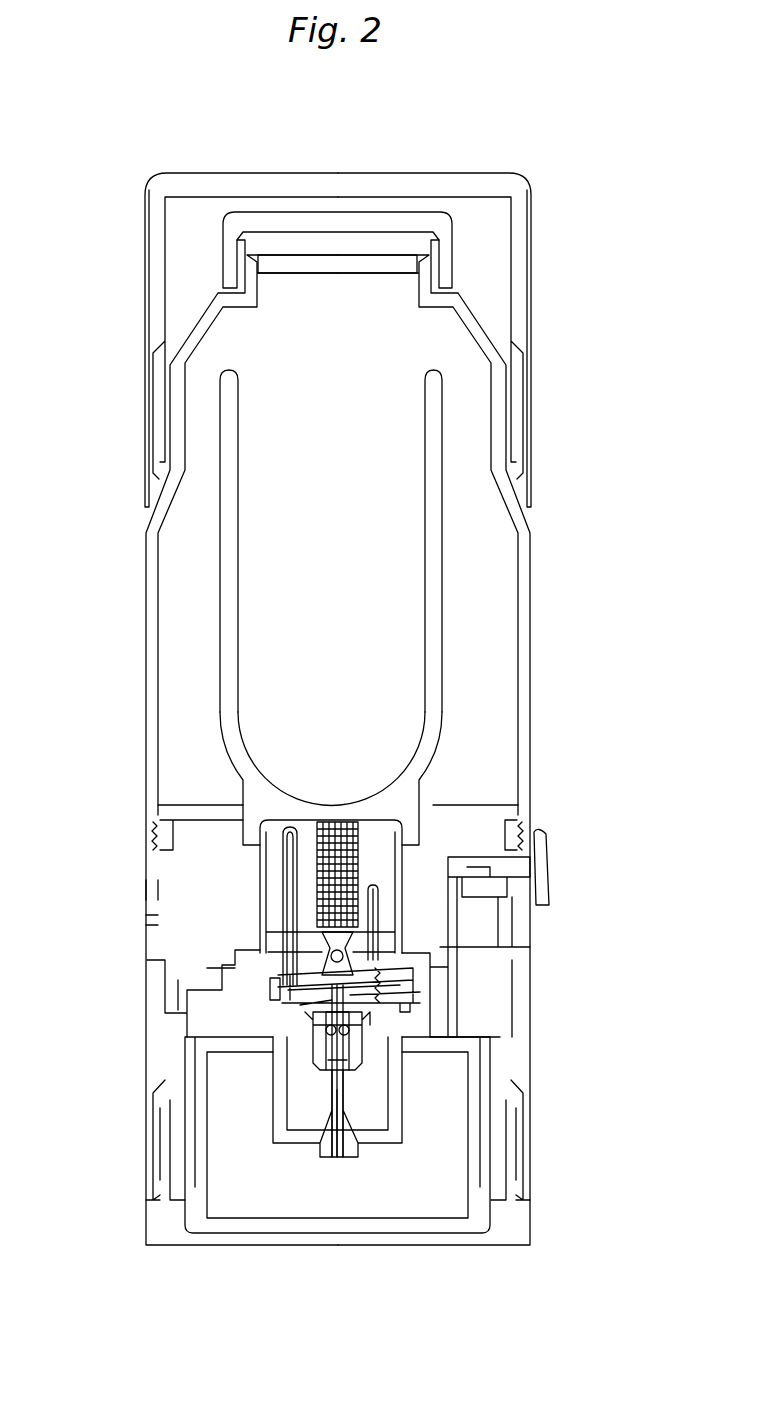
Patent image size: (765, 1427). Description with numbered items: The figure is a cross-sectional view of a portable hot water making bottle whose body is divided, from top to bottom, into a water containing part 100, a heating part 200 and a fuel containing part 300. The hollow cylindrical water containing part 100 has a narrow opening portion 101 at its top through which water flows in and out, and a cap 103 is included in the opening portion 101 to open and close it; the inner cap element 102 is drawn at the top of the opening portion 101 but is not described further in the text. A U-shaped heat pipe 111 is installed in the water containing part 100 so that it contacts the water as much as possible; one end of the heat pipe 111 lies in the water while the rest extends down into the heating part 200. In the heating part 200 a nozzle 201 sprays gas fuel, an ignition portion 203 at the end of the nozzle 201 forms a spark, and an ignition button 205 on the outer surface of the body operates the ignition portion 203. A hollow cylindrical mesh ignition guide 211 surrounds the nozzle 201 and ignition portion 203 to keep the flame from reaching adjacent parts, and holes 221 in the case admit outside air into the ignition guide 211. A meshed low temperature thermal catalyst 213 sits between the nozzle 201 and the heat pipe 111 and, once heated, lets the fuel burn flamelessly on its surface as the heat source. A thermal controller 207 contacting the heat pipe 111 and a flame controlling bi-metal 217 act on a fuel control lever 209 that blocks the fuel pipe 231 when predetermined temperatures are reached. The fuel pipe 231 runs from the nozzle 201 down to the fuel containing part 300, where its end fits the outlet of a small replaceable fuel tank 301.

The water containing part 100 is at (553, 200).
The opening portion 101 is at (338, 268).
The cap 102 is at (302, 218).
The cap 103 is at (505, 184).
The heat pipe 111 is at (225, 567).
The heating part 200 is at (553, 795).
The nozzle 201 is at (340, 1020).
The ignition portion 203 is at (320, 980).
The ignition button 205 is at (541, 831).
The thermal controller 207 is at (268, 858).
The fuel control lever 209 is at (285, 965).
The ignition guide 211 is at (268, 888).
The low temperature thermal catalyst 213 is at (325, 825).
The flame controlling bi-metal 217 is at (372, 886).
The holes 221 is at (152, 887).
The fuel pipe 231 is at (335, 1090).
The fuel containing part 300 is at (553, 1020).
The fuel tank 301 is at (437, 1204).